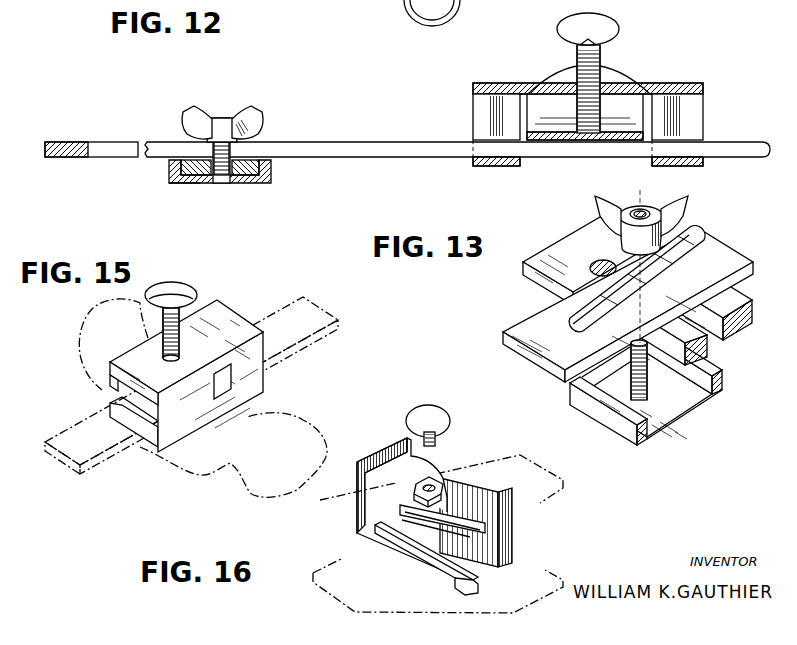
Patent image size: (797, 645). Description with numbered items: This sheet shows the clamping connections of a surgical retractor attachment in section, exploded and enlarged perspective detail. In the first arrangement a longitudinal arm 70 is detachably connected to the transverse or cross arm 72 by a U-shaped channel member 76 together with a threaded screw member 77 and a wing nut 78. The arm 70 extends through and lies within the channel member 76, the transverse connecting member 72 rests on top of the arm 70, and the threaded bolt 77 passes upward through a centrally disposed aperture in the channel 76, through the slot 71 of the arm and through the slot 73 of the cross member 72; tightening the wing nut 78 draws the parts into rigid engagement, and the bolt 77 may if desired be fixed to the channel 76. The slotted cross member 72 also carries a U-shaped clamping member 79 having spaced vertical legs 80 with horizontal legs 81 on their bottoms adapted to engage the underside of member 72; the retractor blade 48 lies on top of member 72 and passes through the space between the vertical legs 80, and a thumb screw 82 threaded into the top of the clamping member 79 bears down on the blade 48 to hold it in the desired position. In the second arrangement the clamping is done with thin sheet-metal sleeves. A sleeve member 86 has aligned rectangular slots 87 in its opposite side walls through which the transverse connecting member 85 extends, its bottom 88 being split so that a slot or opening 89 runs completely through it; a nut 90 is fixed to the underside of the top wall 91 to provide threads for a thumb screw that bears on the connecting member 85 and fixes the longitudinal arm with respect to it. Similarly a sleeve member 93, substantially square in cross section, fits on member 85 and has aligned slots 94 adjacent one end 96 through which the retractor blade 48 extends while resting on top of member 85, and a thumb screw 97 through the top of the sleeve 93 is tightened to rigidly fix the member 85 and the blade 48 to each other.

In FIG. 12, the retractor blade 48 is at (542, 141).
In FIG. 15, the retractor blade 48 is at (250, 417).
In FIG. 12, the longitudinal arm 70 is at (258, 158).
In FIG. 13, the longitudinal arm 70 is at (548, 257).
In FIG. 12, the slot 71 is at (181, 184).
In FIG. 13, the slot 71 is at (595, 265).
In FIG. 12, the transverse connecting member 72 is at (350, 143).
In FIG. 13, the transverse connecting member 72 is at (530, 327).
In FIG. 13, the slot 73 is at (692, 248).
In FIG. 12, the U-shaped channel member 76 is at (270, 181).
In FIG. 13, the U-shaped channel member 76 is at (668, 417).
In FIG. 12, the threaded screw member 77 is at (222, 117).
In FIG. 13, the threaded screw member 77 is at (651, 382).
In FIG. 12, the wing nut 78 is at (252, 118).
In FIG. 13, the wing nut 78 is at (608, 218).
In FIG. 12, the U-shaped clamping member 79 is at (672, 86).
In FIG. 12, the vertical legs 80 is at (480, 118).
In FIG. 12, the horizontal legs 81 is at (648, 103).
In FIG. 12, the thumb screw 82 is at (600, 28).
In FIG. 15, the transverse connecting member 85 is at (278, 328).
In FIG. 16, the transverse connecting member 85 is at (548, 500).
In FIG. 16, the sleeve member 86 is at (435, 461).
In FIG. 16, the rectangular slots 87 is at (487, 535).
In FIG. 16, the bottom 88 is at (547, 567).
In FIG. 16, the slot or opening 89 is at (455, 588).
In FIG. 16, the nut 90 is at (442, 480).
In FIG. 16, the top wall 91 is at (397, 458).
In FIG. 15, the sleeve member 93 is at (204, 311).
In FIG. 15, the aligned slots 94 is at (258, 374).
In FIG. 15, the end 96 is at (140, 447).
In FIG. 15, the thumb screw 97 is at (183, 297).